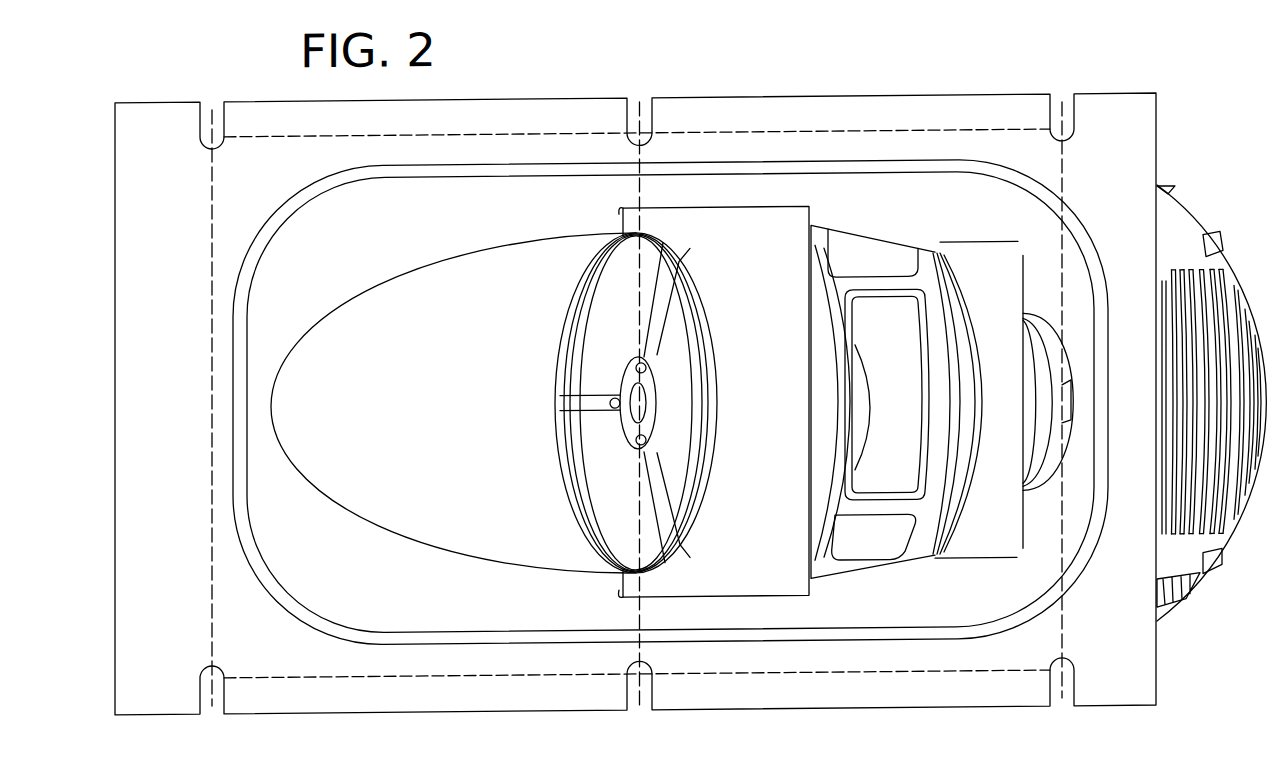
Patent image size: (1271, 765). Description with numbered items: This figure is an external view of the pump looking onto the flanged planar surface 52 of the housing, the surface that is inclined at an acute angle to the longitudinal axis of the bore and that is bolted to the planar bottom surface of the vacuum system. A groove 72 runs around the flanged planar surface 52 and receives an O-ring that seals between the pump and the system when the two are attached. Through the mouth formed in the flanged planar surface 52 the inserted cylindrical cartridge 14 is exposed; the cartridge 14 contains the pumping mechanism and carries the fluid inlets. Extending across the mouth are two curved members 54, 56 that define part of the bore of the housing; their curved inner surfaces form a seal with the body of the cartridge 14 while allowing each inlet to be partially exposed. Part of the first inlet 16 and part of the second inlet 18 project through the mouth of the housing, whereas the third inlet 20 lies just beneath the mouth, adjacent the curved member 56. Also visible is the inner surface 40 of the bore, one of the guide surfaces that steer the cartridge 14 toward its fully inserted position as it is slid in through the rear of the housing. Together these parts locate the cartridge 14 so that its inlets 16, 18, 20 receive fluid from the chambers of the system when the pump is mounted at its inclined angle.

The flanged planar surface 52 is at (143, 250).
The groove 72 is at (275, 229).
The inner surface 40 is at (380, 322).
The curved member 54 is at (757, 245).
The first fluid inlet 16 is at (610, 305).
The second fluid inlet 18 is at (858, 261).
The cylindrical cartridge 14 is at (888, 291).
The curved member 56 is at (980, 292).
The third fluid inlet 20 is at (1073, 403).